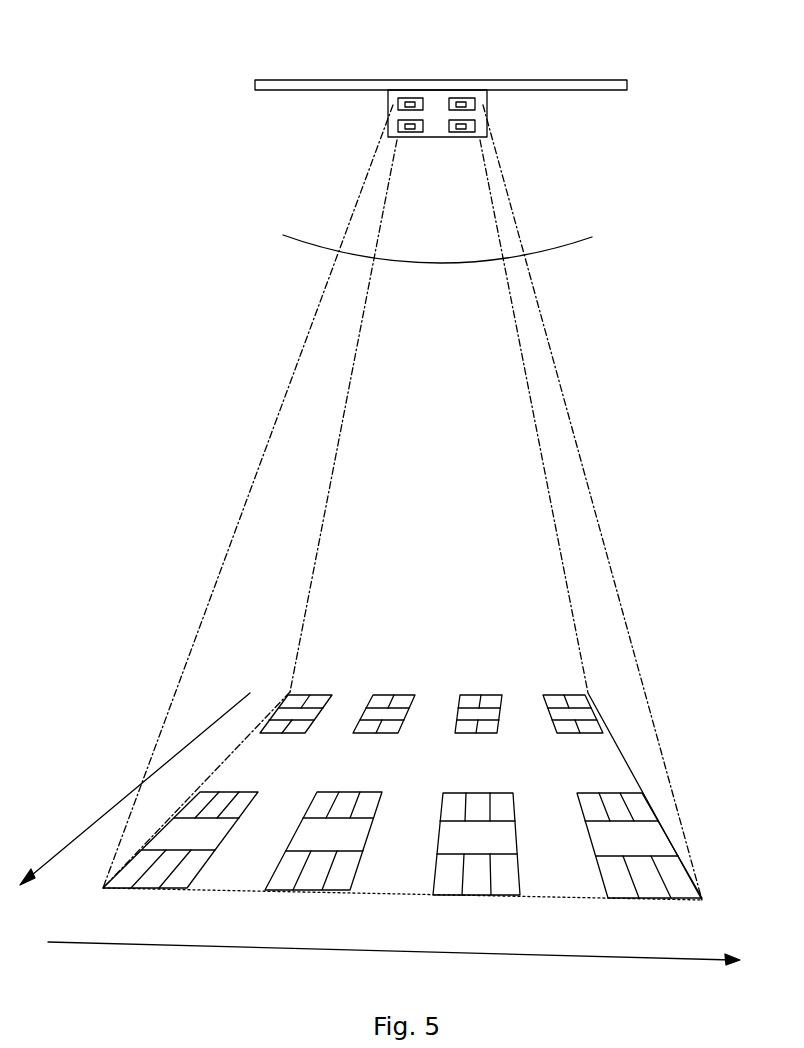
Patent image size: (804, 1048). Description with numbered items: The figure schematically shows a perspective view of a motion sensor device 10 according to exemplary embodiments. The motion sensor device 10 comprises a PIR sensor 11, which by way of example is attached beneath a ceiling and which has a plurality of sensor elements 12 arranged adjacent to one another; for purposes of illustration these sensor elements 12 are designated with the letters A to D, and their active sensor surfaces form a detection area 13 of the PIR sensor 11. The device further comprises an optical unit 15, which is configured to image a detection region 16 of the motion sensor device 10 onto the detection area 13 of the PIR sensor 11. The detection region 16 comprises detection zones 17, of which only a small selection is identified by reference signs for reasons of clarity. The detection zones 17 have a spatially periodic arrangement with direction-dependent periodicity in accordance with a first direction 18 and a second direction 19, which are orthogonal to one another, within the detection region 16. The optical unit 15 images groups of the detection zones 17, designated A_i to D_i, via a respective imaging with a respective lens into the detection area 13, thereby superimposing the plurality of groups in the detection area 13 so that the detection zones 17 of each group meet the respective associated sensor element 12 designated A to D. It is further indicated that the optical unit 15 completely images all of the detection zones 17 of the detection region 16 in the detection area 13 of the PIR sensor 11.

The motion sensor device 10 is at (672, 72).
The PIR sensor 11 is at (480, 131).
The sensor elements 12 is at (411, 104).
The detection area 13 is at (461, 104).
The optical unit 15 is at (582, 240).
The detection region 16 is at (430, 700).
The detection zones 17 is at (204, 790).
The first direction 18 is at (92, 822).
The second direction 19 is at (697, 958).